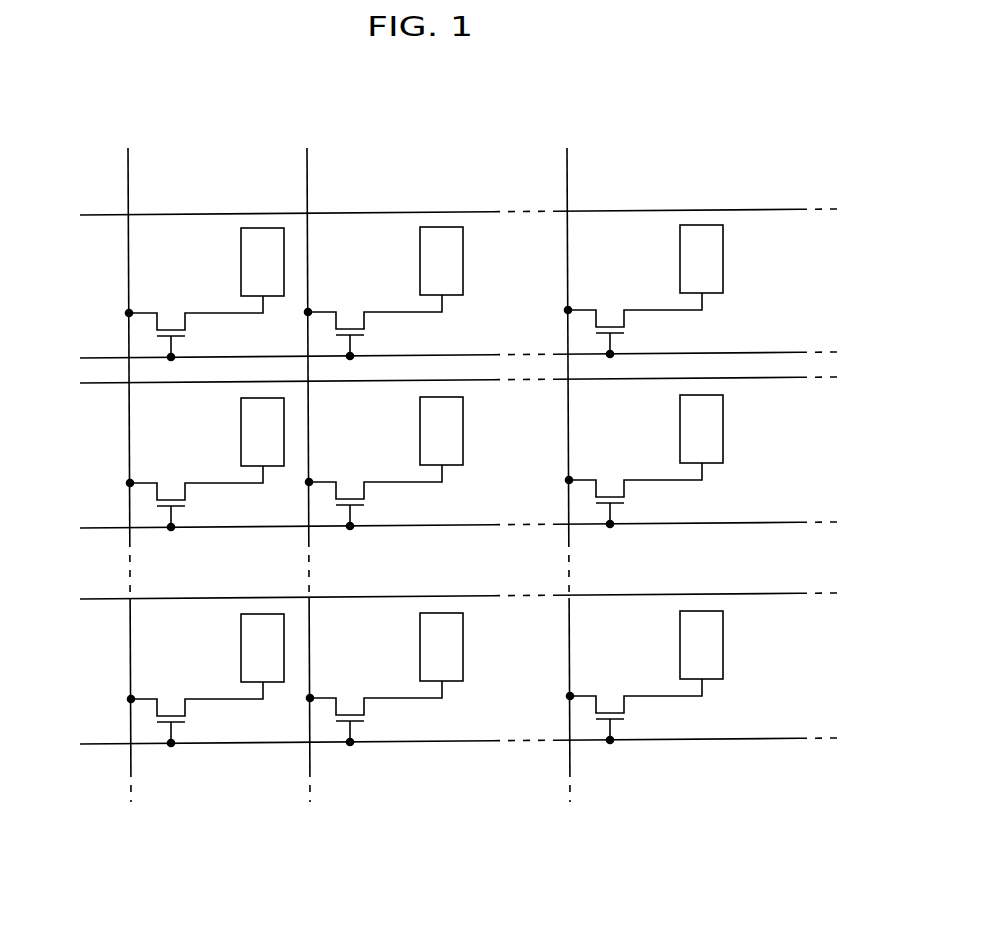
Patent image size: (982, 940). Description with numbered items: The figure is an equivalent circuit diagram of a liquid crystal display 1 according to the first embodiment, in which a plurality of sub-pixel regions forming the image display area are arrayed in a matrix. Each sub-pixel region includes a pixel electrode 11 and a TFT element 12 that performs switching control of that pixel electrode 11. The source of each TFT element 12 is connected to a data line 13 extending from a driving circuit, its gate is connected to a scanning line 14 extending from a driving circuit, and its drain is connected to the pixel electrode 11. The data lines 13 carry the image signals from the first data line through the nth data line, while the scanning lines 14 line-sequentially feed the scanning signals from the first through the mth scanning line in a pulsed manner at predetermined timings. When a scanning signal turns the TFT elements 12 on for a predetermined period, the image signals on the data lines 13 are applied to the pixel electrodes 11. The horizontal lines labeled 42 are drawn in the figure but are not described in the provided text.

The liquid crystal display 1 is at (736, 109).
The pixel electrode 11 is at (262, 238).
The TFT element 12 is at (203, 339).
The data line 13 is at (130, 194).
The scanning line 14 is at (93, 358).
The common line 42 is at (90, 214).